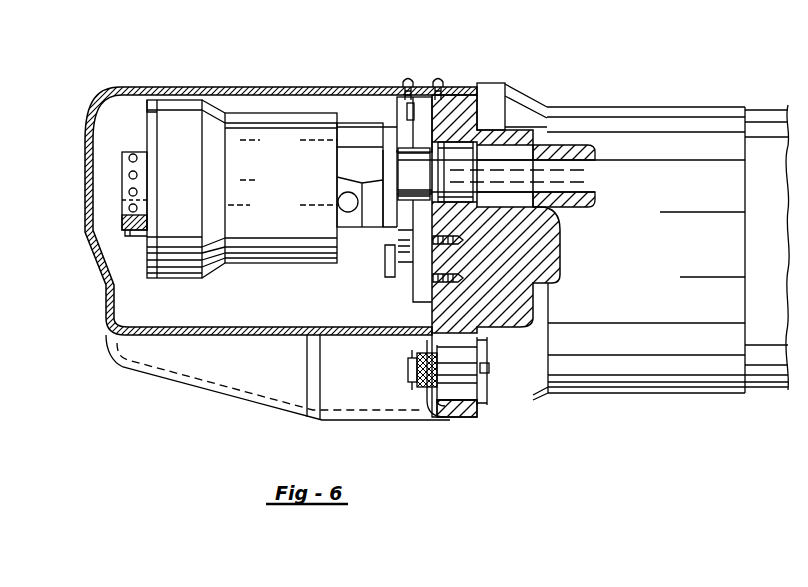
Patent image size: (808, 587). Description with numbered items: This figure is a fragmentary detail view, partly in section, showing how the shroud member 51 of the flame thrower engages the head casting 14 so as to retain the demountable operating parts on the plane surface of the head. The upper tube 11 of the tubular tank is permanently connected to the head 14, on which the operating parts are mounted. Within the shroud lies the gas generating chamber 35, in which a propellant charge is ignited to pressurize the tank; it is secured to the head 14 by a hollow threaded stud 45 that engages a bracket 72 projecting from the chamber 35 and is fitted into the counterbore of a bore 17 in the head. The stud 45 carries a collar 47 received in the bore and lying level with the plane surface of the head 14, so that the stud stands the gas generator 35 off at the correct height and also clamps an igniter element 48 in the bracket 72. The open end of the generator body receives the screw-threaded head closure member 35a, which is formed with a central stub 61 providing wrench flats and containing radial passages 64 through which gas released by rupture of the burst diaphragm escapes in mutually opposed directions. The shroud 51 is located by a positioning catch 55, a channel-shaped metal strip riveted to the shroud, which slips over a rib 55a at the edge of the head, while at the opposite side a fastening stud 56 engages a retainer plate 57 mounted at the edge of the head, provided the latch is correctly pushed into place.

The upper tube 11 is at (656, 241).
The head casting 14 is at (512, 254).
The bore 17 is at (446, 220).
The gas generating chamber 35 is at (295, 158).
The head closure member 35a is at (152, 120).
The hollow threaded stud 45 is at (433, 168).
The collar 47 is at (436, 138).
The igniter element 48 is at (382, 168).
The shroud member 51 is at (249, 87).
The positioning catch 55 is at (418, 85).
The rib 55a is at (455, 107).
The fastening stud 56 is at (408, 358).
The retainer plate 57 is at (478, 395).
The central stub 61 is at (137, 236).
The radial passages 64 is at (133, 153).
The bracket 72 is at (368, 127).